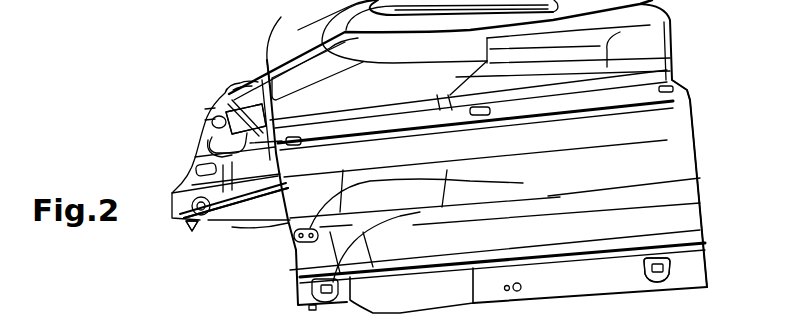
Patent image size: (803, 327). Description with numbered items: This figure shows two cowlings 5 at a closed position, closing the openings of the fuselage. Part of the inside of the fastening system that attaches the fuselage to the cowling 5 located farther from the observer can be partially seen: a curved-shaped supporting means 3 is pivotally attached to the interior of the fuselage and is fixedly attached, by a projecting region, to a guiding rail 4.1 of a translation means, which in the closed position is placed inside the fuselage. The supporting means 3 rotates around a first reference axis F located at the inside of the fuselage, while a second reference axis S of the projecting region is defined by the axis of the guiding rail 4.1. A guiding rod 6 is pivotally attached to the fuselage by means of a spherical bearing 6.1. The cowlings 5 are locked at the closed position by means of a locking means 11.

The supporting means 3 is at (277, 43).
The guiding rail 4.1 is at (252, 82).
The cowling 5 is at (672, 121).
The guiding rod 6 is at (226, 220).
The spherical bearing 6.1 is at (192, 228).
The locking means 11 is at (652, 262).
The second reference axis S is at (205, 120).
The first reference axis F is at (205, 109).